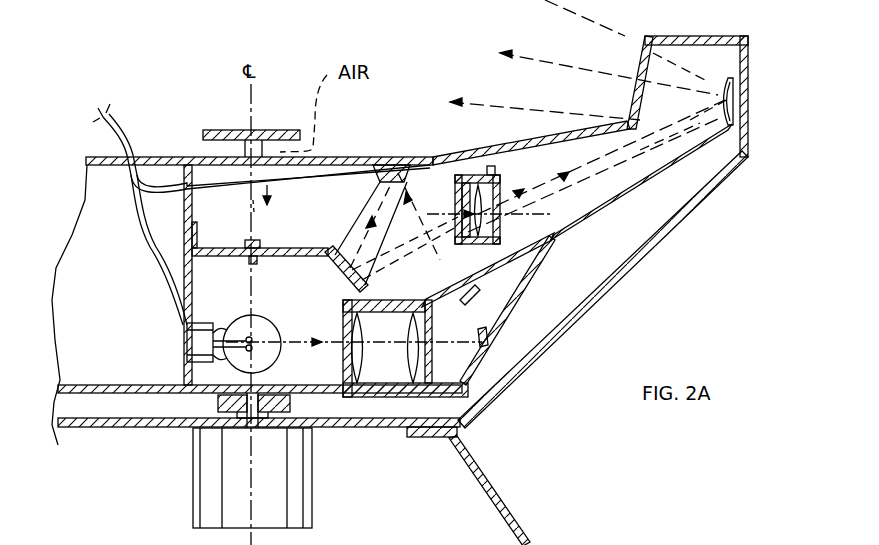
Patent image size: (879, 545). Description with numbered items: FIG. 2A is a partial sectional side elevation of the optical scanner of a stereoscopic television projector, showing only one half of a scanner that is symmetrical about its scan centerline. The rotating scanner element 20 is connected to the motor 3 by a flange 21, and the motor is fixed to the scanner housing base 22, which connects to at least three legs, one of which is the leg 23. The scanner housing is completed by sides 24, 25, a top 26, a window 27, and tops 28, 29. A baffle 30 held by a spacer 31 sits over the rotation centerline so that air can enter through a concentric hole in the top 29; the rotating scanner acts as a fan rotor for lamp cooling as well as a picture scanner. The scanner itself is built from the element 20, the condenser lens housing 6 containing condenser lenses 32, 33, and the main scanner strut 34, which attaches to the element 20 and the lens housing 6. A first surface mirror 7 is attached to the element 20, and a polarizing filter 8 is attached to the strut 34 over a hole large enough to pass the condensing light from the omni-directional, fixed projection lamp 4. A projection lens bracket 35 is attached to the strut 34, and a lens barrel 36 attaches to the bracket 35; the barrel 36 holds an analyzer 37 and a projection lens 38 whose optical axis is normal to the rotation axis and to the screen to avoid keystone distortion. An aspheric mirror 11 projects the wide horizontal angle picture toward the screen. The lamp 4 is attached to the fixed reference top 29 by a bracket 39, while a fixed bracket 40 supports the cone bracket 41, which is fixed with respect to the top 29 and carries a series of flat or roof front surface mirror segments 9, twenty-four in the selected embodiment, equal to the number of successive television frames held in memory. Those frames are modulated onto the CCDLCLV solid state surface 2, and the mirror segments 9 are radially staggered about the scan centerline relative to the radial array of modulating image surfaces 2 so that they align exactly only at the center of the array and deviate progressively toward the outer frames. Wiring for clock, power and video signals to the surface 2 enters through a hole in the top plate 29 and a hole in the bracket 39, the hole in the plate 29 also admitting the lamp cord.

The CCDLCLV solid state surface 2 is at (378, 181).
The motor 3 is at (314, 484).
The projection lamp 4 is at (263, 322).
The condenser lens housing 6 is at (343, 355).
The first surface mirror 7 is at (486, 332).
The polarizing filter 8 is at (462, 310).
The mirror segments 9 is at (342, 255).
The aspheric mirror 11 is at (723, 92).
The scanner element 20 is at (551, 252).
The flange 21 is at (222, 400).
The scanner housing base 22 is at (157, 430).
The leg 23 is at (497, 480).
The side 24 is at (553, 355).
The side 25 is at (749, 90).
The top 26 is at (690, 36).
The window 27 is at (643, 60).
The top 28 is at (560, 130).
The top plate 29 is at (344, 157).
The baffle 30 is at (244, 130).
The spacer 31 is at (245, 152).
The condenser lens 32 is at (360, 362).
The condenser lens 33 is at (415, 362).
The main scanner strut 34 is at (414, 298).
The projection lens bracket 35 is at (497, 170).
The lens barrel 36 is at (455, 262).
The analyzer 37 is at (458, 197).
The projection lens 38 is at (492, 222).
The bracket 39 is at (189, 211).
The fixed bracket 40 is at (230, 260).
The cone bracket 41 is at (298, 248).